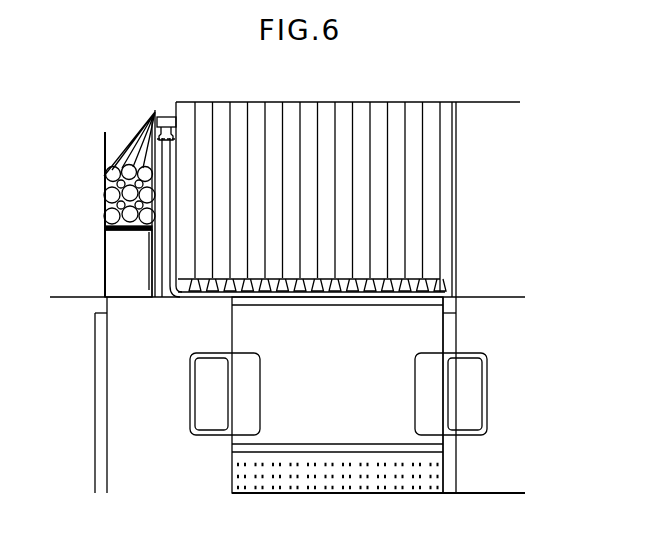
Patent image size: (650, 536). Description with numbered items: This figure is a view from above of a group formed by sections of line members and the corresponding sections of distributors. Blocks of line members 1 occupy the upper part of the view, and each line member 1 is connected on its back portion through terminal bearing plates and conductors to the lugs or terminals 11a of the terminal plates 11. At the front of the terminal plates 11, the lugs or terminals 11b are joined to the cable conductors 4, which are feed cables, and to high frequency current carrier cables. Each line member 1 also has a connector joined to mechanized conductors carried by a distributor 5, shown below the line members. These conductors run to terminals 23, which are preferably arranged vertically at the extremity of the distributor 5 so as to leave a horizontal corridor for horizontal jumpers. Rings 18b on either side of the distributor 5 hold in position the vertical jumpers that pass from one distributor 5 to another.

The line members 1 is at (417, 116).
The cable conductors 4 is at (117, 198).
The distributor 5 is at (443, 333).
The terminal plates 11 is at (163, 117).
The lugs or terminals 11a is at (172, 143).
The lugs or terminals 11b is at (155, 112).
The rings 18b is at (190, 398).
The terminals 23 is at (420, 486).